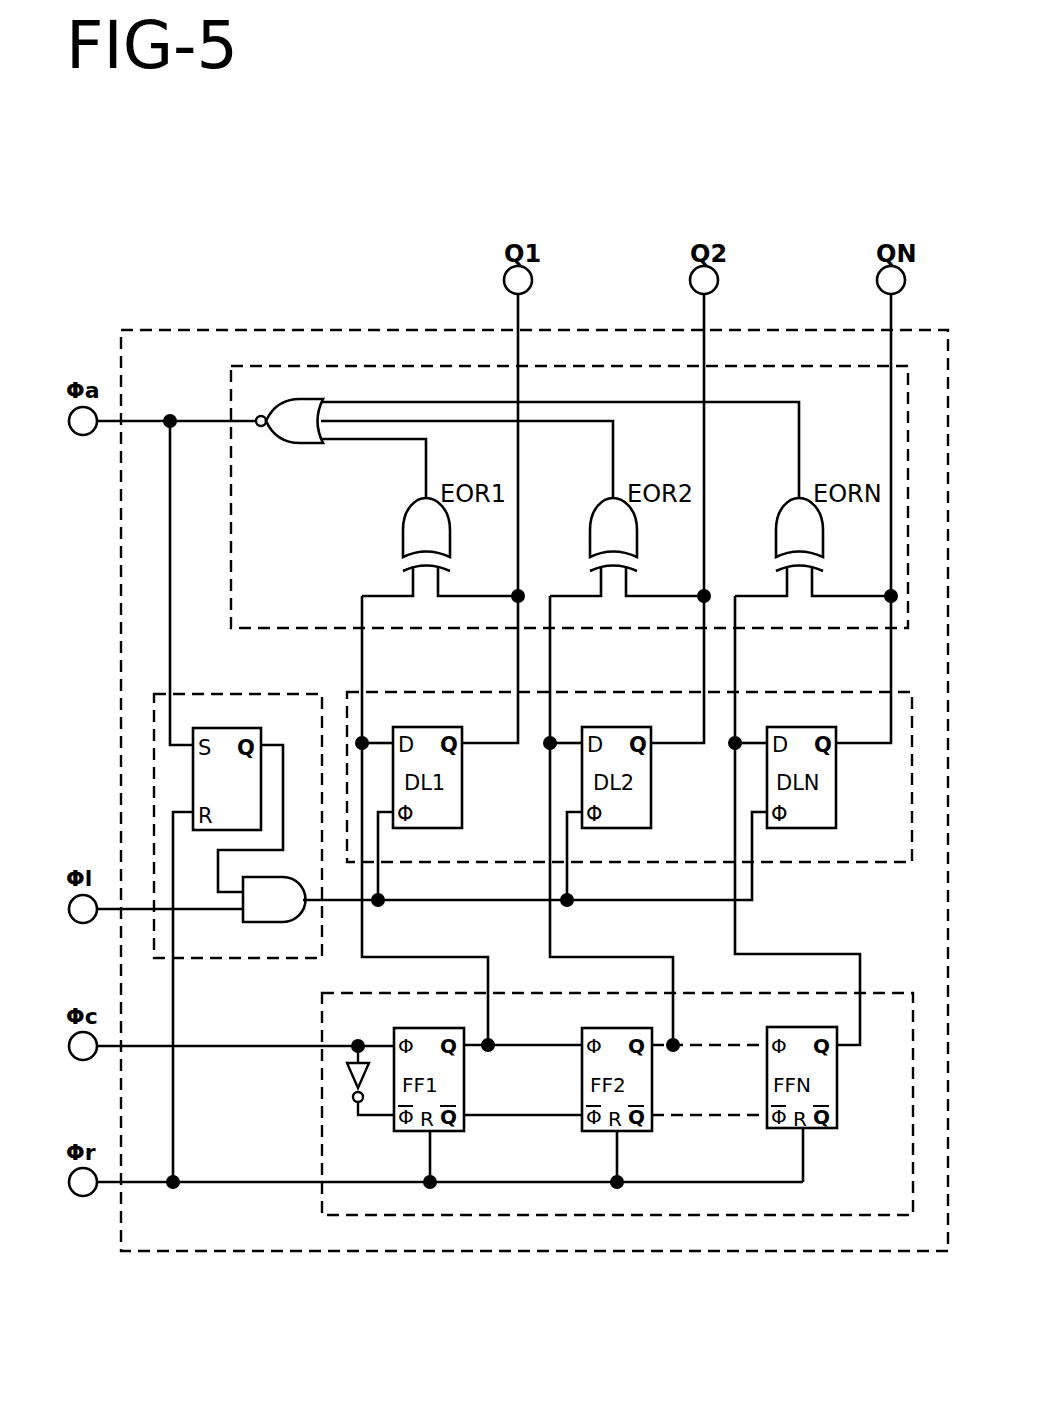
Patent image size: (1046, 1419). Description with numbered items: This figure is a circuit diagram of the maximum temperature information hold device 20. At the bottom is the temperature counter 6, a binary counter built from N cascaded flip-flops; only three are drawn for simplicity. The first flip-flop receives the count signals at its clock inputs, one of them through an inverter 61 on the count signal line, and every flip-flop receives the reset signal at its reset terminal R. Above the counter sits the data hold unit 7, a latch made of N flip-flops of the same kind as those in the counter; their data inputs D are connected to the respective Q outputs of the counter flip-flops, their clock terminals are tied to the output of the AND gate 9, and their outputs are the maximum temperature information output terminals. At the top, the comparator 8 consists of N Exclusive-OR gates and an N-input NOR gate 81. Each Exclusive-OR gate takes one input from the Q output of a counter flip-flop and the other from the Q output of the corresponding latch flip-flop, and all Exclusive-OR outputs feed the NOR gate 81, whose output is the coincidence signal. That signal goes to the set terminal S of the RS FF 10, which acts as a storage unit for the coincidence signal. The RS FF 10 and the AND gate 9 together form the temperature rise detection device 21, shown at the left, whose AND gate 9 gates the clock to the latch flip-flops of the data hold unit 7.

The maximum temperature information hold device 20 is at (313, 365).
The temperature rise detection device 21 is at (197, 805).
The comparator 8 is at (777, 366).
The NOR gate 81 is at (318, 443).
The data hold unit 7 is at (662, 692).
The RS FF 10 is at (226, 728).
The AND gate 9 is at (263, 922).
The temperature counter 6 is at (720, 993).
The inverter 61 is at (364, 1099).